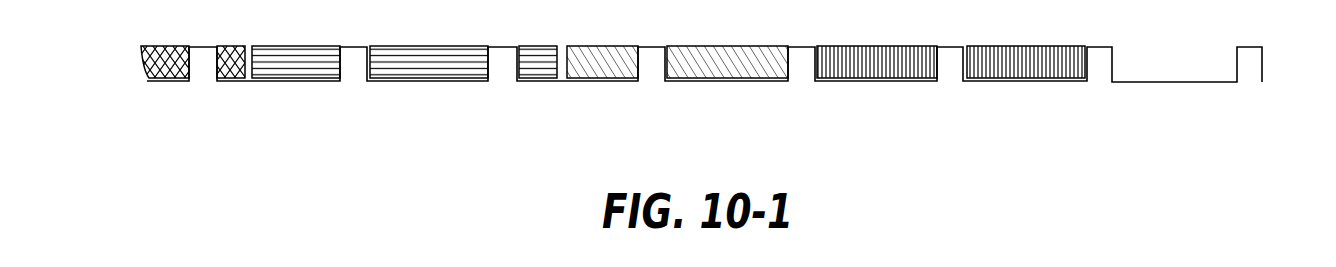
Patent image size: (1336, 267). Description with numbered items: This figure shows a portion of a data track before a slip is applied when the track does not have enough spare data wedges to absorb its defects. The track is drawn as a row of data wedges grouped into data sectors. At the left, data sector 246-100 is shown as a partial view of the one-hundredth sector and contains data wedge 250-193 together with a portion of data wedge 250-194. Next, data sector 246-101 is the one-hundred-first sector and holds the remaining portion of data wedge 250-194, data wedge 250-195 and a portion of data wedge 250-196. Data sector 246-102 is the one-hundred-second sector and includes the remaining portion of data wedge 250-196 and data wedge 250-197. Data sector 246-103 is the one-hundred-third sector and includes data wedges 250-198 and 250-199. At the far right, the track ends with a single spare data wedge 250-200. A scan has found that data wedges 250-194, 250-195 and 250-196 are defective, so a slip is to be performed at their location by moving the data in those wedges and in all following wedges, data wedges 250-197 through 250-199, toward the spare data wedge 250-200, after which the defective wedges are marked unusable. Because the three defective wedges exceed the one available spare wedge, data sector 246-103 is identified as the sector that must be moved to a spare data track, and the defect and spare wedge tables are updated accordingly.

The data sector 246-100 is at (245, 122).
The data sector 246-101 is at (557, 122).
The data sector 246-102 is at (790, 122).
The data sector 246-103 is at (1087, 122).
The data wedge 250-193 is at (192, 93).
The data wedge 250-194 is at (217, 89).
The data wedge 250-195 is at (367, 89).
The data wedge 250-196 is at (517, 89).
The data wedge 250-197 is at (665, 89).
The data wedge 250-198 is at (815, 89).
The data wedge 250-199 is at (962, 89).
The spare data wedge 250-200 is at (1112, 89).